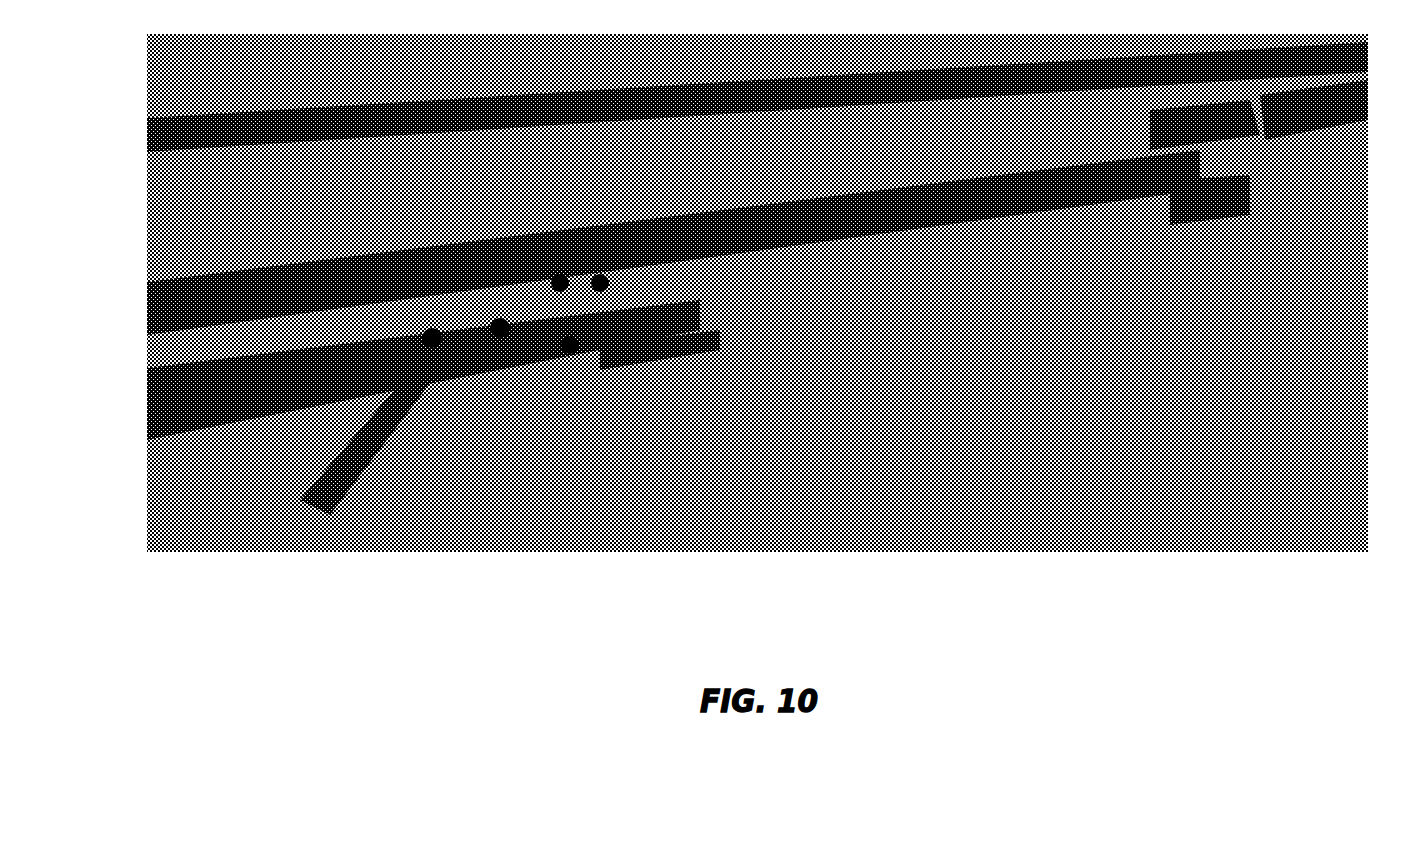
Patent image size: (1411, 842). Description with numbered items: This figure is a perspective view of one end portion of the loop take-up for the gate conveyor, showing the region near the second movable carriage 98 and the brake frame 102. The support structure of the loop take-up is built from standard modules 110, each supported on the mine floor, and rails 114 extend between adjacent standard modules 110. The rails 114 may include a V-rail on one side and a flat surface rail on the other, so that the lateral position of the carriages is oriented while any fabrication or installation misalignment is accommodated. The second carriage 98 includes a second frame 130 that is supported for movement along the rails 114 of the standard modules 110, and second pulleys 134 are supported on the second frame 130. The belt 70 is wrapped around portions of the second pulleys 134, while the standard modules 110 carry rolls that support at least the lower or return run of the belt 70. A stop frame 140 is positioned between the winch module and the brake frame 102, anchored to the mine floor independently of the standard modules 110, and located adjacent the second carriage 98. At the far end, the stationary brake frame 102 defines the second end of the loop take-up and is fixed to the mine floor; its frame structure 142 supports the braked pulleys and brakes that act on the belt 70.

The belt 70 is at (943, 98).
The brake frame 102 is at (1335, 108).
The second movable carriage 98 is at (553, 222).
The second pulleys 134 is at (560, 274).
The second frame 130 is at (458, 325).
The rails 114 is at (705, 338).
The standard modules 110 is at (668, 384).
The stop frame 140 is at (428, 475).
The frame structure 142 is at (1278, 230).